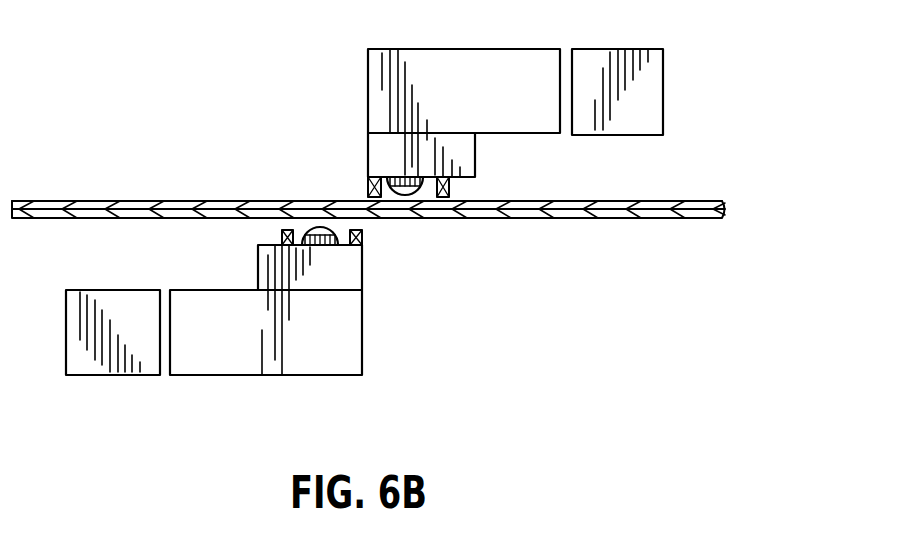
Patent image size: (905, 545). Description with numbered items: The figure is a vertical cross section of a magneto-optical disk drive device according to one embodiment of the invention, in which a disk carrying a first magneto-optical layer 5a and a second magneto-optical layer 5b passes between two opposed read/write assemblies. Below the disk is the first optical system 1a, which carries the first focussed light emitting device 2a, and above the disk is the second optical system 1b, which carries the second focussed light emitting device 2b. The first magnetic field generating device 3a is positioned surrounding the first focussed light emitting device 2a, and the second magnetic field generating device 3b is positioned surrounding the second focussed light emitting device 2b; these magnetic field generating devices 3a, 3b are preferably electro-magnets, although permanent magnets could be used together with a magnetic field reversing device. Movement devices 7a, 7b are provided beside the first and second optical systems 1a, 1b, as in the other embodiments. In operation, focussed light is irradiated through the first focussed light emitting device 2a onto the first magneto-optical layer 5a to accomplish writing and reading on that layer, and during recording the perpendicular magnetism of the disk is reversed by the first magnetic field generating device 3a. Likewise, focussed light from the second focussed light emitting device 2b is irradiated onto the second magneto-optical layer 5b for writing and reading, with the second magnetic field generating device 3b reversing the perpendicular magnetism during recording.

The first optical system 1a is at (320, 337).
The second optical system 1b is at (430, 72).
The first focussed light emitting device 2a is at (330, 247).
The second focussed light emitting device 2b is at (402, 176).
The first magnetic field generating device 3a is at (363, 243).
The second magnetic field generating device 3b is at (368, 190).
The first magneto-optical layer 5a is at (703, 218).
The second magneto-optical layer 5b is at (703, 200).
The movement device 7a is at (88, 358).
The movement device 7b is at (643, 85).